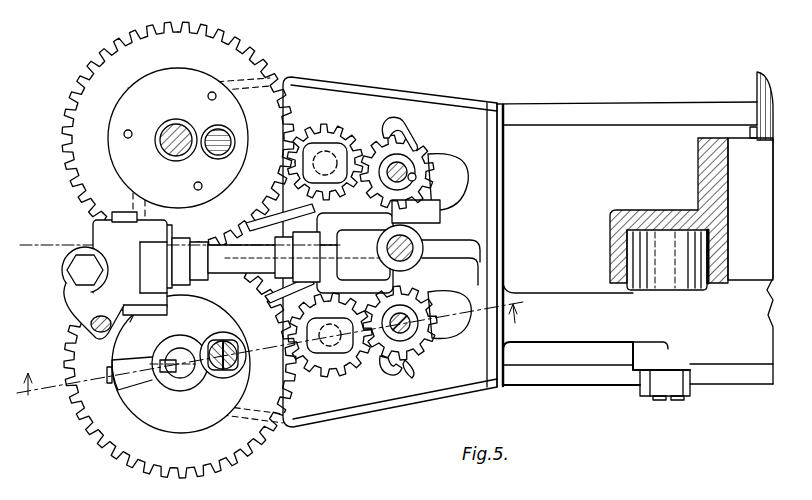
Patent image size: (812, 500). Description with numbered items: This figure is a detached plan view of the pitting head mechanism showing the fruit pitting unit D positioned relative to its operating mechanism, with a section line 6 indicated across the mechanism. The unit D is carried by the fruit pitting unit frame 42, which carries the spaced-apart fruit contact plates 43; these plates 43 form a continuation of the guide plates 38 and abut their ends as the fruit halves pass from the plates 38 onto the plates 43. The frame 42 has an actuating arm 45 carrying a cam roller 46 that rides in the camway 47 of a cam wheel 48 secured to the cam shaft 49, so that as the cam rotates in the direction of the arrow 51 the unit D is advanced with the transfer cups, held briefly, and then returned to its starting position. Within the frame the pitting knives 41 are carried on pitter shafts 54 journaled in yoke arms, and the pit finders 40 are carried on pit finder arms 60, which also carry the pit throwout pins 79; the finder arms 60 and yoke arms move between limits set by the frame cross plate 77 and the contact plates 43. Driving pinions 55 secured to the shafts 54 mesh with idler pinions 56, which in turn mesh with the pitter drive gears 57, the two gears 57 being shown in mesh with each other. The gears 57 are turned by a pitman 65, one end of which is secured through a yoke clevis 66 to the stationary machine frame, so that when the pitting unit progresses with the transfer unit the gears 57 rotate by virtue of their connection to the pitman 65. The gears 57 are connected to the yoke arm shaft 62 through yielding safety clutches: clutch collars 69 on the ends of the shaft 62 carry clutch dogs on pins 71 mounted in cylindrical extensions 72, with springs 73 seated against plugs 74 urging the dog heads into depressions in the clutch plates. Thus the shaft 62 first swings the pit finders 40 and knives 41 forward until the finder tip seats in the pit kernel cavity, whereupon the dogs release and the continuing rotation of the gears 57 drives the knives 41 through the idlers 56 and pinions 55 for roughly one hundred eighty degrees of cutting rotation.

The section line 6- 6 is at (270, 367).
The guide plates 38 is at (610, 112).
The pit finders 40 is at (402, 148).
The pitting knives 41 is at (484, 178).
The fruit pitting unit frame 42 is at (525, 172).
The fruit contact plates 43 is at (327, 75).
The actuating arm 45 is at (569, 300).
The cam roller 46 is at (690, 268).
The camway 47 is at (718, 226).
The cam wheel 48 is at (648, 210).
The cam shaft 49 is at (757, 82).
The arrow 51 is at (697, 434).
The pitter shafts 54 is at (250, 224).
The driving pinions 55 is at (402, 166).
The idler pinions 56 is at (330, 125).
The pitter drive gears 57 is at (72, 101).
The pit finder arms 60 is at (488, 210).
The yoke arm shaft 62 is at (168, 133).
The pitman 65 is at (262, 262).
The yoke clevis 66 is at (441, 216).
The clutch collars 69 is at (173, 390).
The pins 71 is at (240, 373).
The cylindrical extensions 72 is at (76, 250).
The springs 73 is at (140, 313).
The plugs 74 is at (73, 300).
The frame cross plate 77 is at (492, 263).
The pit throwout pins 79 is at (386, 130).
The fruit pitting unit D is at (398, 86).